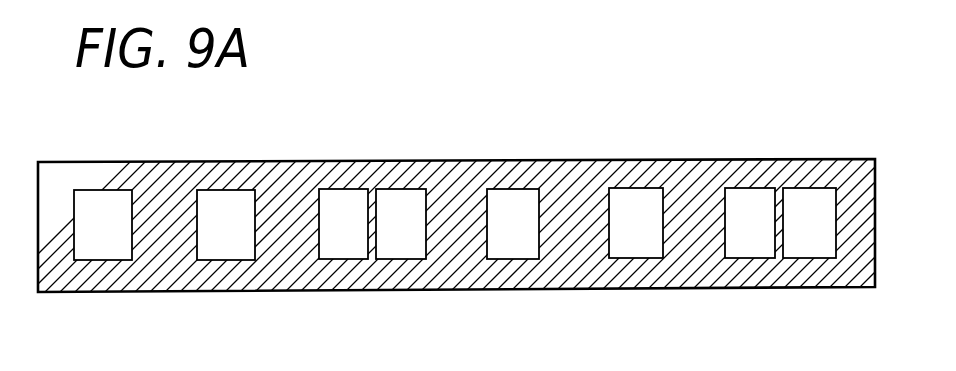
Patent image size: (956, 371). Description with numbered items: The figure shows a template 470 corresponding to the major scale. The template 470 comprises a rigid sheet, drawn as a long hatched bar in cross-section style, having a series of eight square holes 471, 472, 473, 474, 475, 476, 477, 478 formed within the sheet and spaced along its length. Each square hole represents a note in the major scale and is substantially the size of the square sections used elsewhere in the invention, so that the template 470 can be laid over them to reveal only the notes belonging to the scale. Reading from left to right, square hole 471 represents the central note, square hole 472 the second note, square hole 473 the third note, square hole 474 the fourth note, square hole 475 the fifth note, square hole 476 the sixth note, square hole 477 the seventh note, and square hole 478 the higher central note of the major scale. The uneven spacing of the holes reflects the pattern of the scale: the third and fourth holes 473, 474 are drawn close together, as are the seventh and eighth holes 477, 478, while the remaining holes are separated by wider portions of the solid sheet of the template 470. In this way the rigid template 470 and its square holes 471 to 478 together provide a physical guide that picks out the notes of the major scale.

The template 470 is at (224, 161).
The square hole 471 is at (110, 247).
The square hole 472 is at (225, 247).
The square hole 473 is at (340, 243).
The square hole 474 is at (403, 243).
The square hole 475 is at (512, 243).
The square hole 476 is at (641, 243).
The square hole 477 is at (750, 243).
The square hole 478 is at (815, 243).